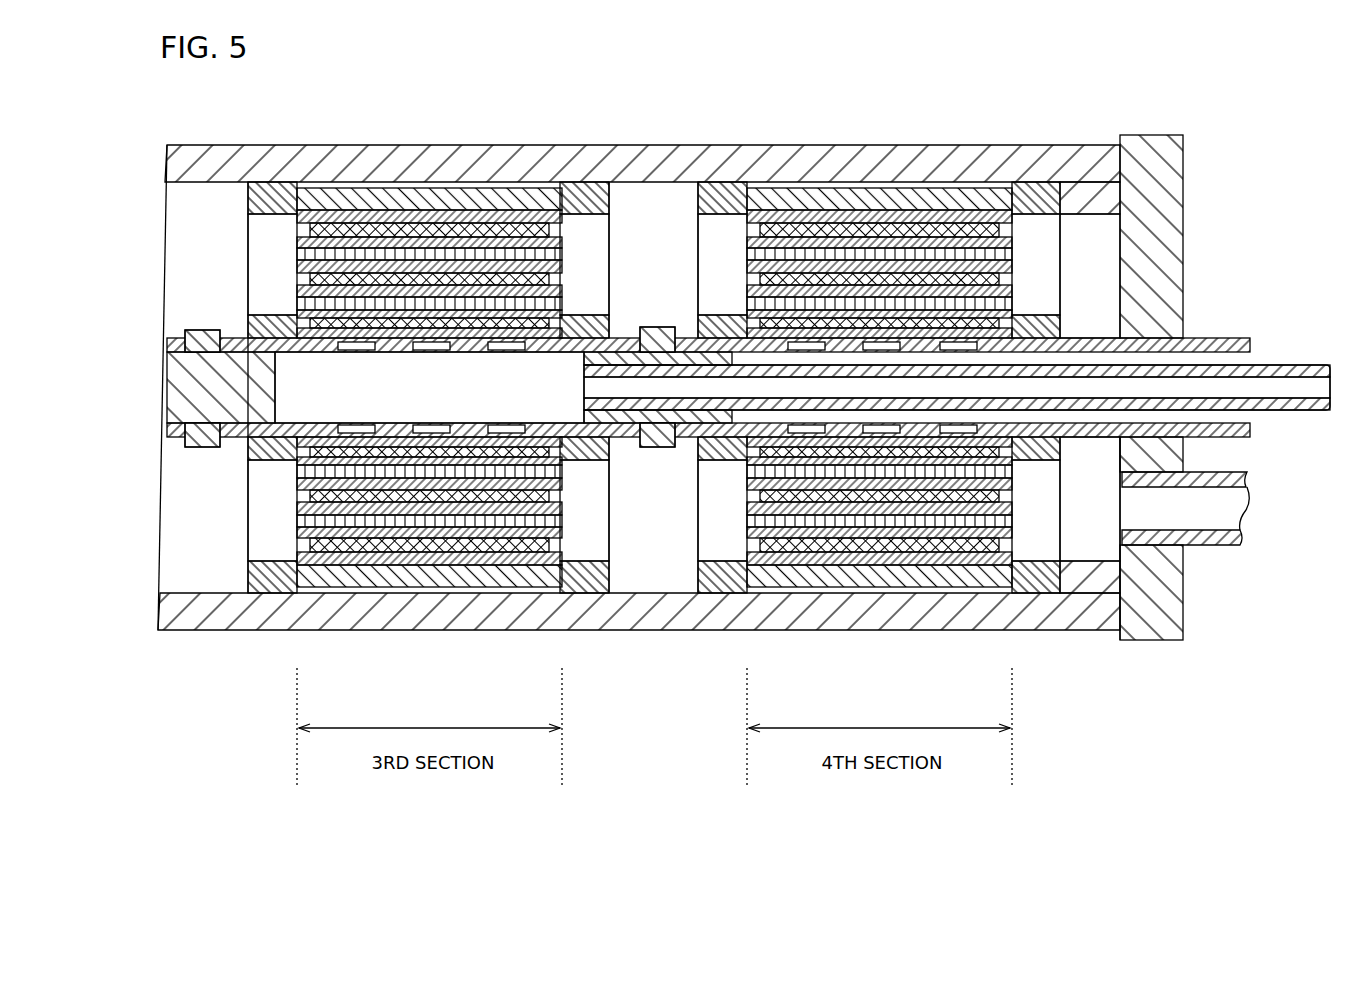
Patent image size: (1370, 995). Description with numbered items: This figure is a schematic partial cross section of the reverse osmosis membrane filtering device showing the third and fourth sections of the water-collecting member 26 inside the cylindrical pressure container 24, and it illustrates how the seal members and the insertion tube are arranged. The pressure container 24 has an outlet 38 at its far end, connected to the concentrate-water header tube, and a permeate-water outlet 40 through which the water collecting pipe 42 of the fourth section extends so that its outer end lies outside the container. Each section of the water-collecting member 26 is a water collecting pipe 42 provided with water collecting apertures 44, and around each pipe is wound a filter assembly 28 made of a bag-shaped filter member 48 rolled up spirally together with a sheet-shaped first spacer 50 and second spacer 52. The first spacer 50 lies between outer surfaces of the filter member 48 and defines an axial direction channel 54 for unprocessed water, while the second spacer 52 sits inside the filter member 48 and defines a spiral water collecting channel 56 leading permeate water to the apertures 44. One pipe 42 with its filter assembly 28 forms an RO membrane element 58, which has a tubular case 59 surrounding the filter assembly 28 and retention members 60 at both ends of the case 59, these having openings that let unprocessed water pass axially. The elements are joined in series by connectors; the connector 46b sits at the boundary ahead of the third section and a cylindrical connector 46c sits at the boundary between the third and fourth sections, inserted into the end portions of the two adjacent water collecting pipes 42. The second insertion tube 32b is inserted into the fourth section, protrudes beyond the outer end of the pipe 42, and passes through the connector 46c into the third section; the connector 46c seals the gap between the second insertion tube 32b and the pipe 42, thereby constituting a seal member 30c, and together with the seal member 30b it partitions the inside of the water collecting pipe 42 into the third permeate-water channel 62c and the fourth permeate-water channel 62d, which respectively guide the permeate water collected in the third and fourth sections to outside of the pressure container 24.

The pressure container 24 is at (688, 145).
The water-collecting member 26 is at (1243, 338).
The filter assembly 28 is at (395, 258).
The seal member 30b is at (200, 330).
The seal member 30c is at (656, 327).
The second insertion tube 32b is at (1287, 365).
The outlet 38 is at (1195, 545).
The permeate-water outlet 40 is at (1193, 431).
The water collecting pipe 42 is at (1205, 338).
The water collecting apertures 44 is at (953, 421).
The connector 46b is at (200, 447).
The connector 46c is at (656, 447).
The filter member 48 is at (346, 228).
The first spacer 50 is at (334, 215).
The second spacer 52 is at (370, 242).
The axial direction channel 54 is at (518, 302).
The water collecting channel 56 is at (492, 278).
The RO membrane element 58 is at (455, 190).
The case 59 is at (432, 266).
The retention members 60 is at (272, 186).
The third permeate-water channel 62c is at (446, 400).
The fourth permeate-water channel 62d is at (1074, 352).